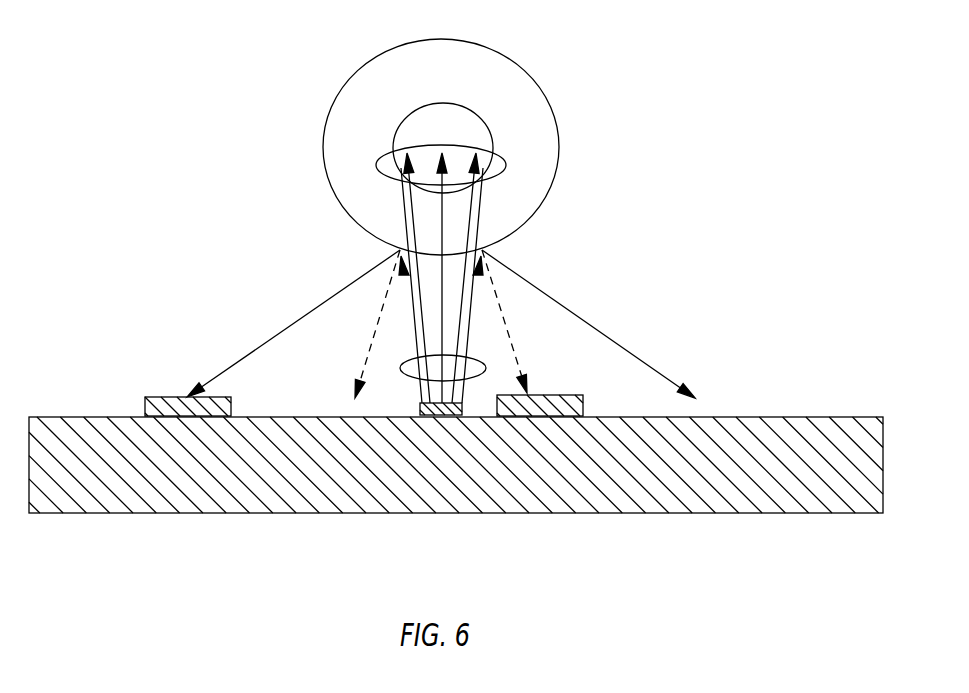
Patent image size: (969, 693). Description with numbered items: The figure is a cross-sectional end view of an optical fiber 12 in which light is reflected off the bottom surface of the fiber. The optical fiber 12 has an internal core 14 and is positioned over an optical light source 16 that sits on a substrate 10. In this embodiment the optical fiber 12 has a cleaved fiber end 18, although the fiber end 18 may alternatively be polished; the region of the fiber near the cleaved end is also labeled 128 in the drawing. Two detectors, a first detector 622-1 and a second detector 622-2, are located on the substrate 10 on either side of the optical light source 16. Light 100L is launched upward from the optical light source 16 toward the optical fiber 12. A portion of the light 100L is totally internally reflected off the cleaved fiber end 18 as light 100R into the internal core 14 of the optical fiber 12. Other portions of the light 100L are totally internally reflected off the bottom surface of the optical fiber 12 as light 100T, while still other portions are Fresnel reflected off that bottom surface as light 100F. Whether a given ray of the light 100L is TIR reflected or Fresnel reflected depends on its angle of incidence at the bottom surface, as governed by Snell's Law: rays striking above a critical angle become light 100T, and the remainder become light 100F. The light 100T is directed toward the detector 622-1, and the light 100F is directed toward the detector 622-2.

The optical fiber 12 is at (493, 50).
The cleaved fiber end 18 is at (368, 75).
The internal core 14 is at (465, 125).
The light 100R is at (508, 165).
The eye surface 128 is at (518, 233).
The light 100T is at (288, 323).
The light 100F is at (388, 318).
The light 100L is at (403, 376).
The substrate 10 is at (810, 417).
The first detector 622-1 is at (143, 402).
The second detector 622-2 is at (584, 405).
The optical light source 16 is at (432, 417).